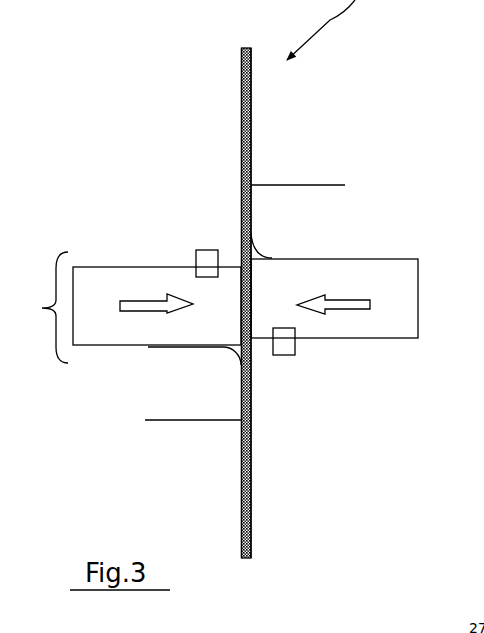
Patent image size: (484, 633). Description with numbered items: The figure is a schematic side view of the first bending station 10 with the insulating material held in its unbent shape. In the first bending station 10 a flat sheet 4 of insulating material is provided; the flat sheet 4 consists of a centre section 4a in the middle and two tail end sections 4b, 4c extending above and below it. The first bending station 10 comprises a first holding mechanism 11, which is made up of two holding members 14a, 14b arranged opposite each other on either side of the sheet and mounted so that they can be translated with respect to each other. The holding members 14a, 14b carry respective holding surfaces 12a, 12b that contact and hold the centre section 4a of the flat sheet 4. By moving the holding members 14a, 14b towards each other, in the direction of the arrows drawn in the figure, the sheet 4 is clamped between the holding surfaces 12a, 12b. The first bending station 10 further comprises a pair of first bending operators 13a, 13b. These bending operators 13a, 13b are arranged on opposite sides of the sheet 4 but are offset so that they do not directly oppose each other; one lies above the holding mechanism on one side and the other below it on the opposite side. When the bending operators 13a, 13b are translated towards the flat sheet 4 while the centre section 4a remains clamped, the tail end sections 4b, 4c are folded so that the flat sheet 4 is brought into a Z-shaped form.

The first bending station 10 is at (330, 20).
The flat sheet 4 is at (235, 152).
The centre section 4a is at (242, 291).
The tail end section 4b is at (251, 120).
The tail end section 4c is at (252, 507).
The first holding mechanism 11 is at (42, 307).
The holding surface 12a is at (240, 293).
The holding surface 12b is at (255, 308).
The first bending operator 13a is at (193, 383).
The first bending operator 13b is at (298, 221).
The holding member 14a is at (103, 290).
The holding member 14b is at (392, 287).